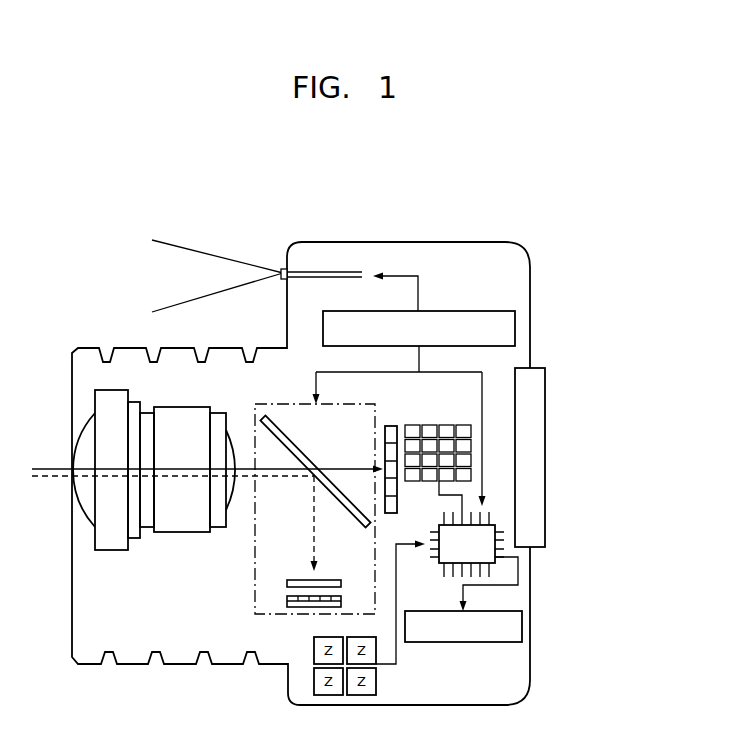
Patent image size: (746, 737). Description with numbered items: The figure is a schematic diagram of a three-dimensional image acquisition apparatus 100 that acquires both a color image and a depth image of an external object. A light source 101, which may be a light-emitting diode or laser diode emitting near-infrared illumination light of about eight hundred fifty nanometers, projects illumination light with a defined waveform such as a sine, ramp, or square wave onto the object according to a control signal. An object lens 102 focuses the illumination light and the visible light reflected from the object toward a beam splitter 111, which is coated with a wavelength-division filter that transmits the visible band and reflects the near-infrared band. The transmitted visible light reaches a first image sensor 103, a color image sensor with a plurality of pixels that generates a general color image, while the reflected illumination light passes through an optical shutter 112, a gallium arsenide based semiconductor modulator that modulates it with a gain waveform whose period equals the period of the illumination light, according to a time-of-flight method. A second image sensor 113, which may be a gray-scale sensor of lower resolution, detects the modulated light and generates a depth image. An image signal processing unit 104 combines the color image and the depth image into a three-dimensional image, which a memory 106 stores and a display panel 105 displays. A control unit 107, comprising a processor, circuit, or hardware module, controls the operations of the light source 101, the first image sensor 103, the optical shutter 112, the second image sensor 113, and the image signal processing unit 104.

The 3D image acquisition apparatus 100 is at (548, 222).
The light source 101 is at (283, 268).
The object lens 102 is at (158, 548).
The first image sensor 103 is at (393, 428).
The image signal processing unit 104 is at (488, 560).
The display panel 105 is at (545, 458).
The memory 106 is at (522, 626).
The control unit 107 is at (515, 328).
The beam splitter 111 is at (307, 457).
The optical shutter 112 is at (287, 583).
The second image sensor 113 is at (287, 603).